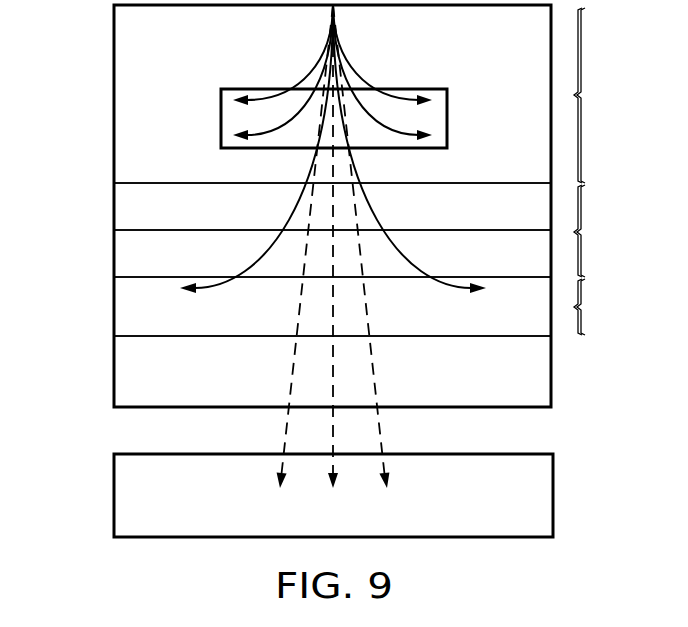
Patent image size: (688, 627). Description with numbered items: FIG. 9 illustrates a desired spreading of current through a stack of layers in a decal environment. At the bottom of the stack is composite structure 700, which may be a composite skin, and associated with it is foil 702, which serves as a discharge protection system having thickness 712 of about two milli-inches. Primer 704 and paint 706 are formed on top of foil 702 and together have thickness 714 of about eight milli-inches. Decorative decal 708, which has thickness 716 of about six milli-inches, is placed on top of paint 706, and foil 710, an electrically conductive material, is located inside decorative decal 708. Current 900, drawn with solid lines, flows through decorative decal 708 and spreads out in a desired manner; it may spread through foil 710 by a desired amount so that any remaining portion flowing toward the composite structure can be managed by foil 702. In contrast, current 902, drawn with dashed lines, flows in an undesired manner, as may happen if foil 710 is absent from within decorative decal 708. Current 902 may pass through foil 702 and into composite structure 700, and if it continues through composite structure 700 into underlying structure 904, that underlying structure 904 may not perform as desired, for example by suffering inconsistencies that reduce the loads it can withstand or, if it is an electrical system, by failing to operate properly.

The composite structure 700 is at (122, 361).
The foil 702 is at (122, 308).
The primer 704 is at (122, 254).
The paint 706 is at (122, 206).
The decorative decal 708 is at (122, 95).
The foil 710 is at (221, 118).
The thickness 712 is at (605, 307).
The thickness 714 is at (605, 231).
The thickness 716 is at (605, 95).
The current 900 is at (350, 64).
The current 902 is at (284, 420).
The underlying structure 904 is at (116, 497).